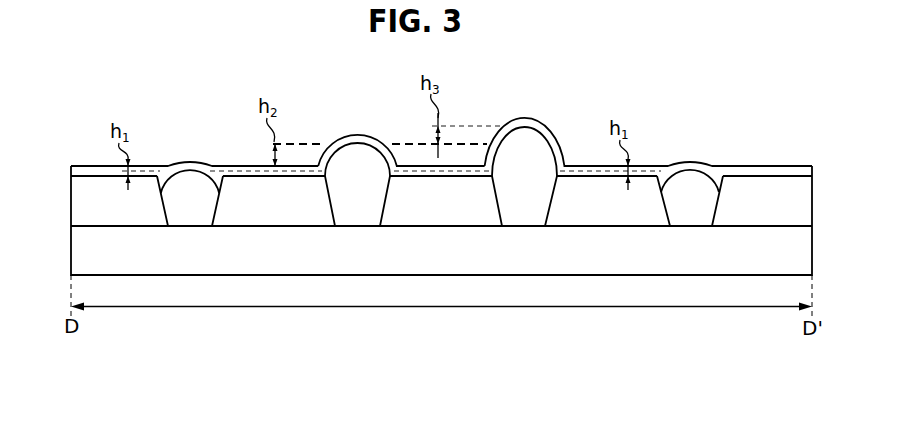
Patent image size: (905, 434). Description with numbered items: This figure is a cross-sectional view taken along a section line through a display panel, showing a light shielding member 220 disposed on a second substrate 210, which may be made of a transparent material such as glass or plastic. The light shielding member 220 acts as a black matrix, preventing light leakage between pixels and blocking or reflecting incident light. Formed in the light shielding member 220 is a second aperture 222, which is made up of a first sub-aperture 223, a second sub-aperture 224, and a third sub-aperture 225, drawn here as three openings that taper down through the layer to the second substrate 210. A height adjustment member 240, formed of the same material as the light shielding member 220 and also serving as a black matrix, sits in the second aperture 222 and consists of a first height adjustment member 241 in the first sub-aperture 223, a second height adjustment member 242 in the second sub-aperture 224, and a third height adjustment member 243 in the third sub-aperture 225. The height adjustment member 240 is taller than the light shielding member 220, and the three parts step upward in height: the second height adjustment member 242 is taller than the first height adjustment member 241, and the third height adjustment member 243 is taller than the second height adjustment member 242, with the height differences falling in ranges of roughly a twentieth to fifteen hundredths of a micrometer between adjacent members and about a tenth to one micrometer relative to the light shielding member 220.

The second substrate 210 is at (90, 250).
The light shielding member 220 is at (90, 200).
The second aperture 222 is at (477, 262).
The first sub-aperture 223 is at (170, 200).
The second sub-aperture 224 is at (330, 192).
The third sub-aperture 225 is at (547, 197).
The height adjustment member 240 is at (441, 227).
The first height adjustment member 241 is at (188, 183).
The second height adjustment member 242 is at (357, 160).
The third height adjustment member 243 is at (525, 148).